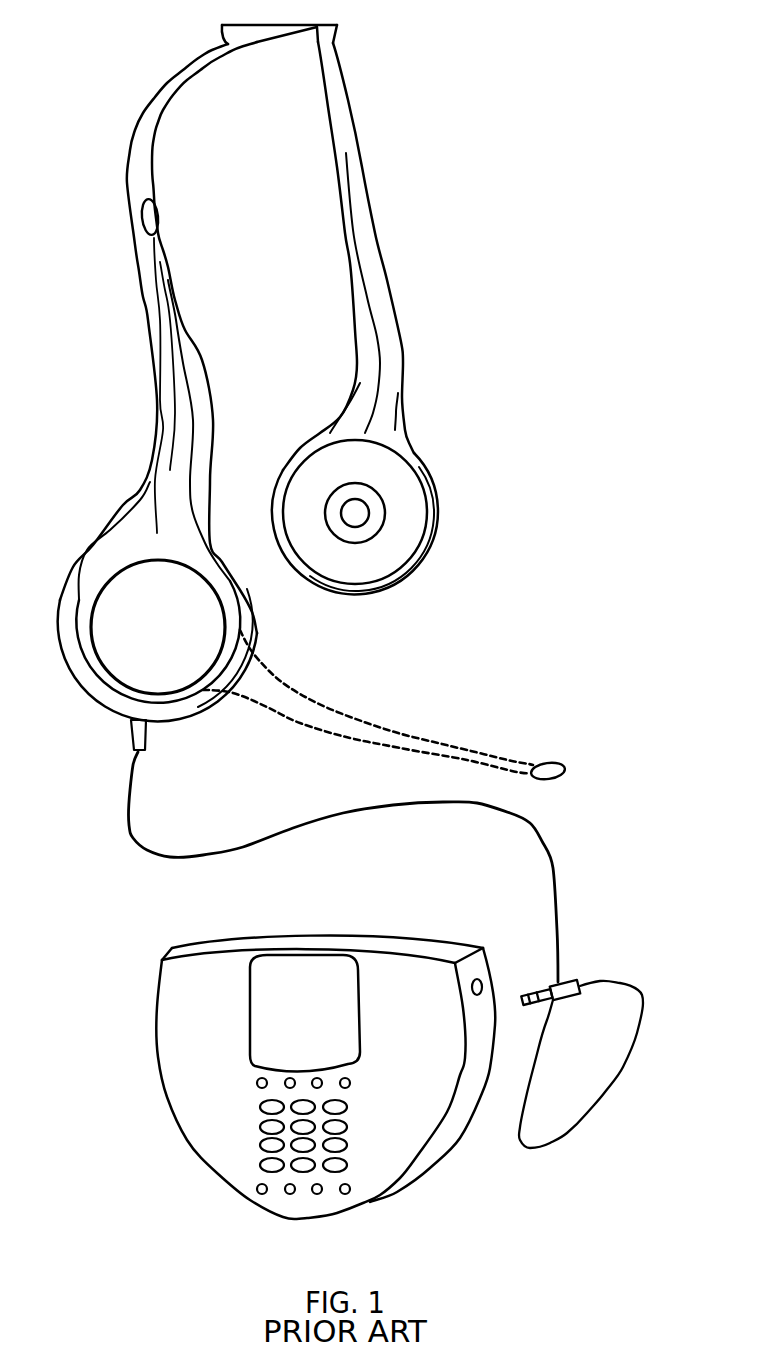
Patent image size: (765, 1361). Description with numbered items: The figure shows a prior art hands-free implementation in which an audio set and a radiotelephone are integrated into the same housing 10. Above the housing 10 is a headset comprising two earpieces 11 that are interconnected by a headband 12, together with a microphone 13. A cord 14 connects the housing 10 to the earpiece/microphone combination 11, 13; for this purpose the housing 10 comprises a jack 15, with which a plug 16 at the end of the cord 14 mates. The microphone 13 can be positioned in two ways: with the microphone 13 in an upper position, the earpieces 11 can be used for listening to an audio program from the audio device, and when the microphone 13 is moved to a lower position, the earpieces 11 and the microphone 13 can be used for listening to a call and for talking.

The housing 10 is at (236, 934).
The earpieces 11 is at (255, 592).
The headband 12 is at (350, 92).
The microphone 13 is at (155, 203).
The cord 14 is at (211, 856).
The jack 15 is at (478, 973).
The plug 16 is at (572, 977).